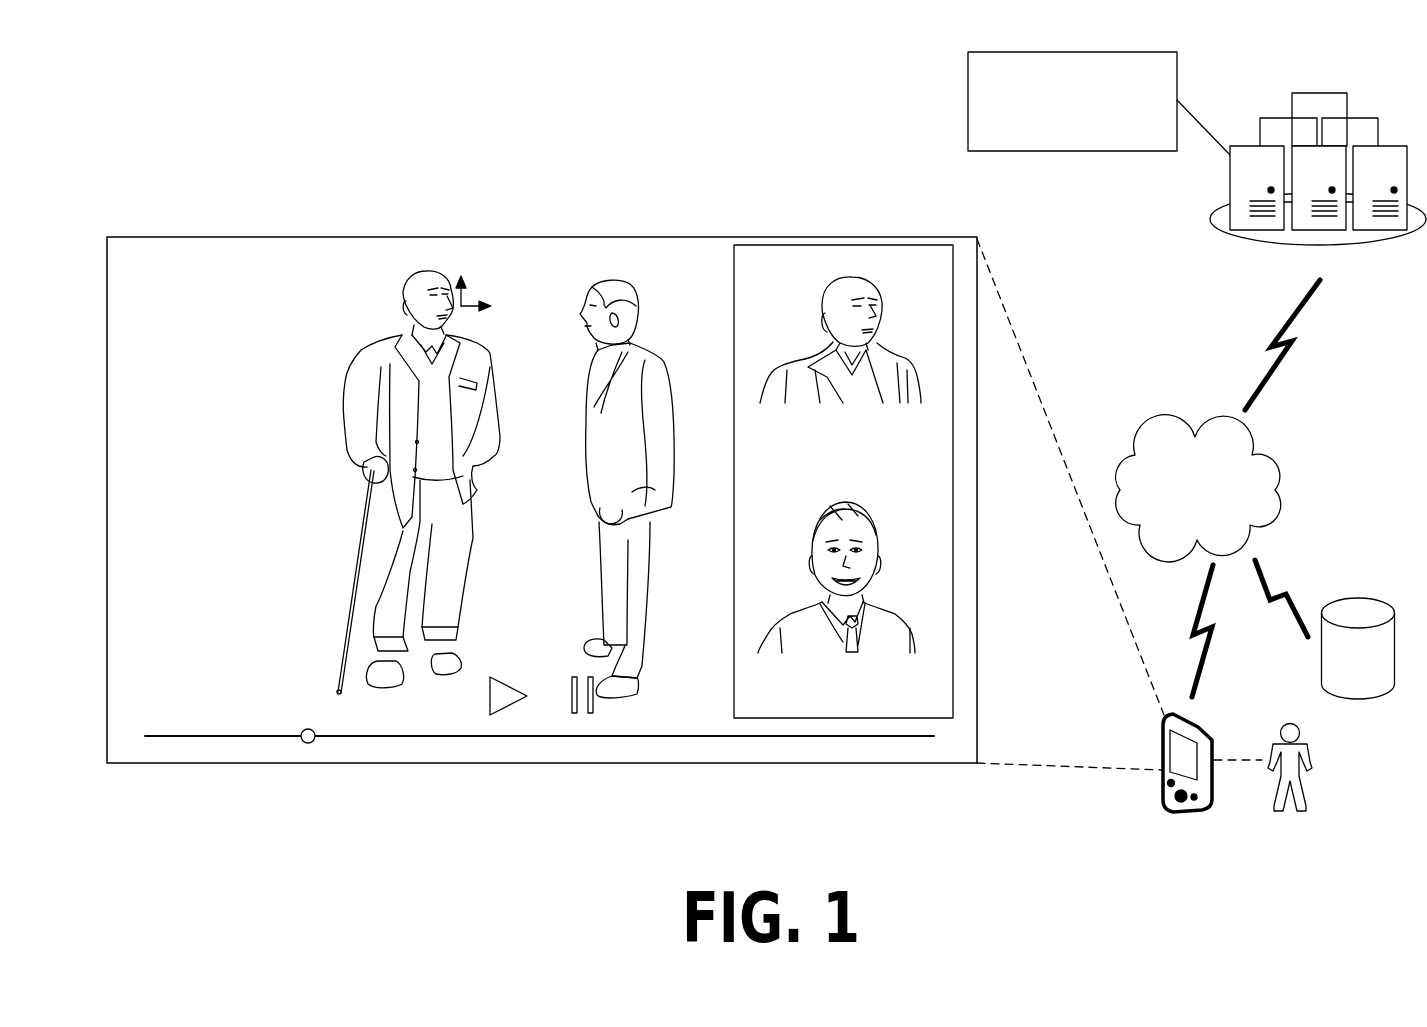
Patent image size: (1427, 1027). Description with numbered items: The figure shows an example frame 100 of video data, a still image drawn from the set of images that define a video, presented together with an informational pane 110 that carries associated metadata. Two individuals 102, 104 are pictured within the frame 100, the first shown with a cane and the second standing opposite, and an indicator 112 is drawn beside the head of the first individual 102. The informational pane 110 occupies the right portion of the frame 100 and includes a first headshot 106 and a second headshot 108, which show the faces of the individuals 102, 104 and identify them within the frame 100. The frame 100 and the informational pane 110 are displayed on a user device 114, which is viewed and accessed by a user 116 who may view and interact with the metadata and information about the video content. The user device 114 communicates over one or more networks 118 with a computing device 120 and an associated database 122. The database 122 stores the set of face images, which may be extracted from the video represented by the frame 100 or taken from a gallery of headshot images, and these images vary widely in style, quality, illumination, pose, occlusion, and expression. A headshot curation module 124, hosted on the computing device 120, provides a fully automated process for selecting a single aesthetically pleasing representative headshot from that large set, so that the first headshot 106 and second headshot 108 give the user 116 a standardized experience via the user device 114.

The frame 100 is at (132, 215).
The individual 102 is at (383, 337).
The individual 104 is at (647, 345).
The first headshot 106 is at (802, 363).
The second headshot 108 is at (797, 618).
The informational pane 110 is at (757, 247).
The motion indicator arrows 112 is at (461, 306).
The user device 114 is at (1190, 793).
The user 116 is at (1292, 799).
The network(s) 118 is at (1213, 509).
The computing device 120 is at (1318, 216).
The database 122 is at (1361, 626).
The headshot curation module 124 is at (1088, 131).